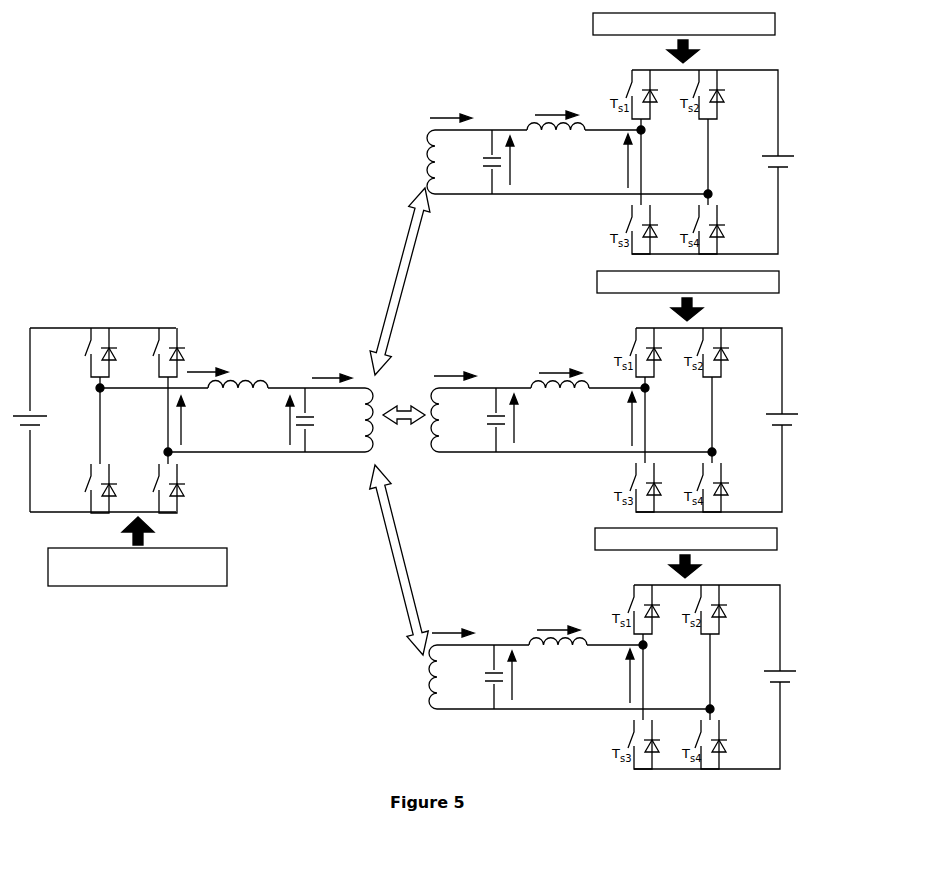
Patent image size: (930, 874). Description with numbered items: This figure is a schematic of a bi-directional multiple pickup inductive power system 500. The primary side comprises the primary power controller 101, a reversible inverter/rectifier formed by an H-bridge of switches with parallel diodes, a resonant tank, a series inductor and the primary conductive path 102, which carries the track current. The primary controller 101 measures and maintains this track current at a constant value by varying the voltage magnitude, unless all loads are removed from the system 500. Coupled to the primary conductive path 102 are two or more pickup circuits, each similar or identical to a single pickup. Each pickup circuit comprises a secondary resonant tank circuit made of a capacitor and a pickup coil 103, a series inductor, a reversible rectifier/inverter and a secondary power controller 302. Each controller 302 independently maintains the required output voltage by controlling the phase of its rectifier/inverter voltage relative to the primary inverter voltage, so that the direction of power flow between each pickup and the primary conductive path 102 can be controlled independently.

The bi-directional multiple pickup inductive power system 500 is at (240, 222).
The primary power controller 101 is at (121, 574).
The primary conductive path 102 is at (358, 424).
The pickup coil 103 is at (432, 143).
The secondary power controller 302 is at (598, 22).